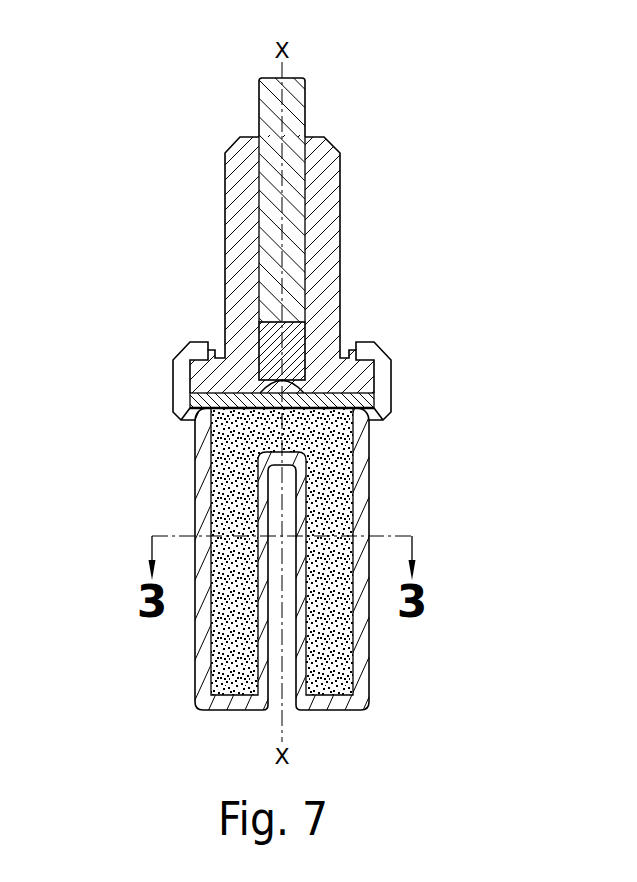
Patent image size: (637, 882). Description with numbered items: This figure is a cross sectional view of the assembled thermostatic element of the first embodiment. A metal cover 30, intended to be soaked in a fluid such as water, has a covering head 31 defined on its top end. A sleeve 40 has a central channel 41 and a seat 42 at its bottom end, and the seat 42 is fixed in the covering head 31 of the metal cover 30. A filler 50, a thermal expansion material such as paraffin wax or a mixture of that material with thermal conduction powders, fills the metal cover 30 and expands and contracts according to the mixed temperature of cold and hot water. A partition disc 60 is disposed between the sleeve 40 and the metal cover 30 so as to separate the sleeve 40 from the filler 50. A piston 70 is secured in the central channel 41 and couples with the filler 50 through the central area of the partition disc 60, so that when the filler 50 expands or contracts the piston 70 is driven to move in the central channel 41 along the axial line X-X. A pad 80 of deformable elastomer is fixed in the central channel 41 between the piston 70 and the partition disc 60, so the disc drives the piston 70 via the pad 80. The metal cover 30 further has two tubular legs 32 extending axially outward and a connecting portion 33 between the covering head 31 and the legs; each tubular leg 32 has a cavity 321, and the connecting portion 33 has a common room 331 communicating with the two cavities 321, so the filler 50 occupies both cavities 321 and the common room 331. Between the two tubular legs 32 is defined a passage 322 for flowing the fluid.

The piston 70 is at (250, 115).
The central channel 41 is at (306, 220).
The sleeve 40 is at (216, 251).
The seat 42 is at (203, 378).
The pad 80 is at (252, 326).
The partition disc 60 is at (362, 374).
The covering head 31 is at (392, 397).
The metal cover 30 is at (380, 472).
The connecting portion 33 is at (369, 437).
The common room 331 is at (268, 429).
The tubular leg 32 is at (195, 641).
The cavity 321 is at (213, 649).
The passage 322 is at (284, 500).
The filler 50 is at (222, 511).